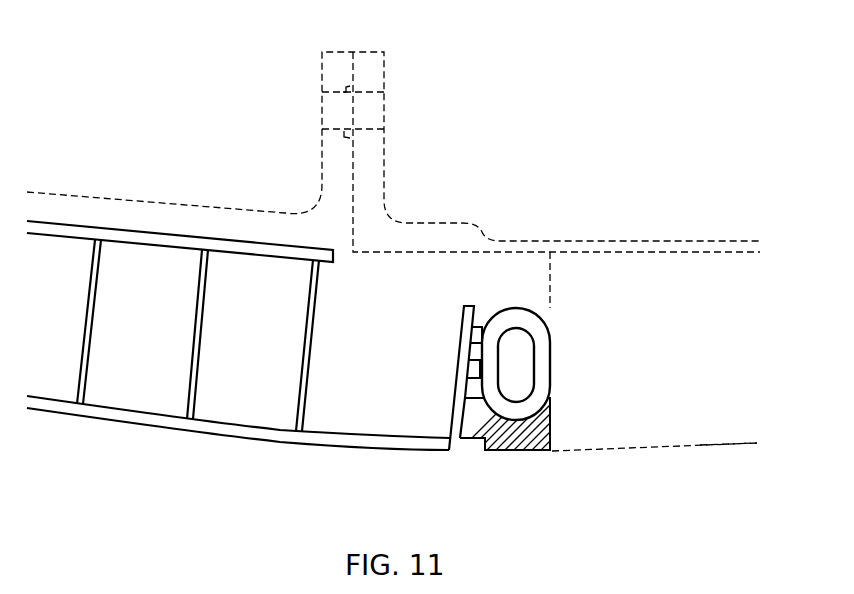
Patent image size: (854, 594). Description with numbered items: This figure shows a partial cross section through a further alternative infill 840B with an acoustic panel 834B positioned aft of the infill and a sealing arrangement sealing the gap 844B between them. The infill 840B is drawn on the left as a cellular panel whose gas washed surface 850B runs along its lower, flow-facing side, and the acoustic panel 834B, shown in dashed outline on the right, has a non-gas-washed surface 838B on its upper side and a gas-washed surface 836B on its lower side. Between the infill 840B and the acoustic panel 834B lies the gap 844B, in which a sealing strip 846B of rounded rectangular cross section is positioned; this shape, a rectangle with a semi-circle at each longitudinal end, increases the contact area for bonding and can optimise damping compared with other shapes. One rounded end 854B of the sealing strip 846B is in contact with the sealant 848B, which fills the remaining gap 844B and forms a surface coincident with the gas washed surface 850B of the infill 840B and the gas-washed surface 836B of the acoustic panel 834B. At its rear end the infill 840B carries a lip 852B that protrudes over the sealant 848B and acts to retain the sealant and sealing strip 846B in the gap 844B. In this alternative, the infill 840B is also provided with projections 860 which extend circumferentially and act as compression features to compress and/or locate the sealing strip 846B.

The gap 844B is at (491, 289).
The sealing strip 846B is at (518, 313).
The non-gas-washed surface 838B is at (645, 252).
The gas washed surface 850B is at (52, 398).
The infill 840B is at (225, 400).
The projections 860 is at (468, 390).
The lip 852B is at (477, 446).
The rounded end 854B is at (518, 421).
The sealant 848B is at (528, 440).
The acoustic panel 834B is at (680, 415).
The gas-washed surface 836B is at (717, 445).